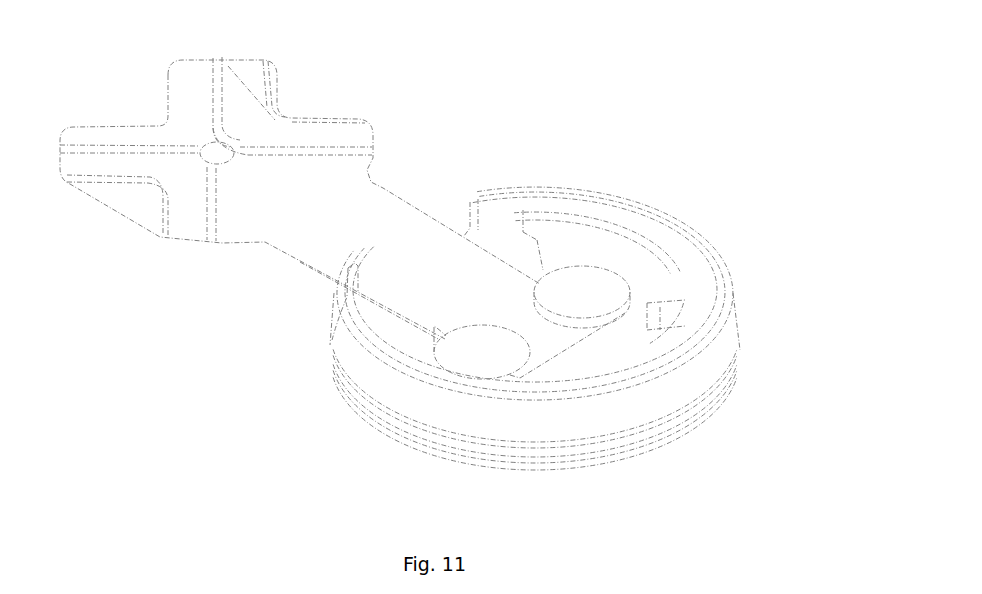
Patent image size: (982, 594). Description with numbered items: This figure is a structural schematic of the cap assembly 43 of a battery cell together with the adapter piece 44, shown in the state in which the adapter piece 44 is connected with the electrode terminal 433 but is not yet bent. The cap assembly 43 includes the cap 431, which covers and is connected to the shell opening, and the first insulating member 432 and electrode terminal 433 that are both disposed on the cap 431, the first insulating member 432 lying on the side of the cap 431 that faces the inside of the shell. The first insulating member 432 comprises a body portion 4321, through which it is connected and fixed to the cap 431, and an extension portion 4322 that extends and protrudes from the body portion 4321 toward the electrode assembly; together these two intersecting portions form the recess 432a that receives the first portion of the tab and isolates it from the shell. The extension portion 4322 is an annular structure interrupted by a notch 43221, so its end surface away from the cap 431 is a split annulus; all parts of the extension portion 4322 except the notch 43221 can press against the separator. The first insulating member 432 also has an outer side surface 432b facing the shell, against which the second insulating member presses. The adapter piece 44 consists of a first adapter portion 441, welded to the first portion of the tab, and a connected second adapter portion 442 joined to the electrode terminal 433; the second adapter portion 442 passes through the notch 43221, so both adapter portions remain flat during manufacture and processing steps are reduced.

The cap assembly 43 is at (232, 417).
The cap 431 is at (420, 445).
The first insulating member 432 is at (267, 392).
The body portion 4321 is at (360, 393).
The extension portion 4322 is at (408, 396).
The notch 43221 is at (449, 215).
The recess 432a is at (598, 368).
The outer side surface 432b is at (710, 345).
The electrode terminal 433 is at (583, 293).
The adapter piece 44 is at (447, 70).
The first adapter portion 441 is at (275, 123).
The second adapter portion 442 is at (392, 214).